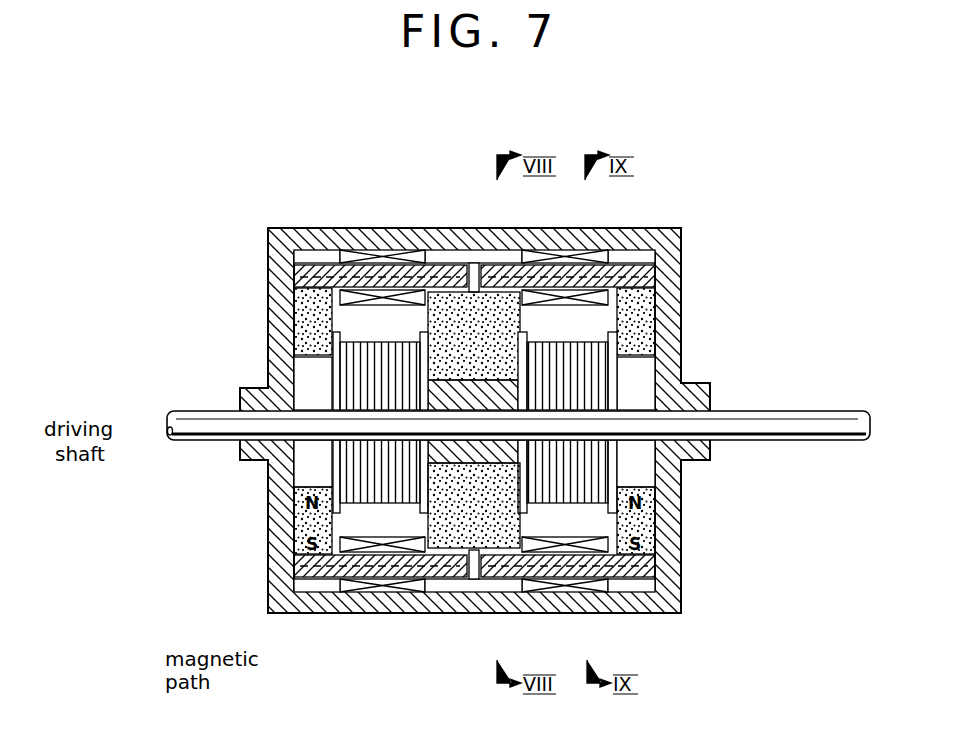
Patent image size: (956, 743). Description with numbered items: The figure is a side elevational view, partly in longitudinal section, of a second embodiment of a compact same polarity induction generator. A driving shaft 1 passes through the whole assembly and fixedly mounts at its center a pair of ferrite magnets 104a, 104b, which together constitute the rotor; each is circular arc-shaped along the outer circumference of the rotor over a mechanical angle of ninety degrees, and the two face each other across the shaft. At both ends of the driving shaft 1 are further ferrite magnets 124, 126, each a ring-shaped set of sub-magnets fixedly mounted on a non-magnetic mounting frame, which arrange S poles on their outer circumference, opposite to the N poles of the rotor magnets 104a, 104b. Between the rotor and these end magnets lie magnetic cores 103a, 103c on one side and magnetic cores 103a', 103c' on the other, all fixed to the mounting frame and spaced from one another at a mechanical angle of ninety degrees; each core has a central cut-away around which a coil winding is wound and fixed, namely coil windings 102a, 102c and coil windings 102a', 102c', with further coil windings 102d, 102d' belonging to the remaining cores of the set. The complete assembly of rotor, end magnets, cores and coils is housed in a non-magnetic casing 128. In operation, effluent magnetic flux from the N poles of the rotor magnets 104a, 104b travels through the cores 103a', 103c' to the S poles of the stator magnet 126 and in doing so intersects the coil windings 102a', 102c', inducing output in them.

The driving shaft 1 is at (197, 443).
The ferrite magnet 124 is at (300, 330).
The ferrite magnet 126 is at (640, 327).
The non-magnetic casing 128 is at (365, 262).
The coil winding 102a is at (407, 207).
The coil winding 102a' is at (622, 228).
The coil winding 102c is at (382, 623).
The coil winding 102c' is at (602, 601).
The coil winding 102d is at (294, 505).
The coil winding 102d' is at (659, 376).
The magnetic core 103a is at (373, 219).
The magnetic core 103a' is at (633, 235).
The magnetic core 103c is at (375, 632).
The magnetic core 103c' is at (623, 580).
The ferrite magnet 104a is at (492, 296).
The ferrite magnet 104b is at (497, 540).